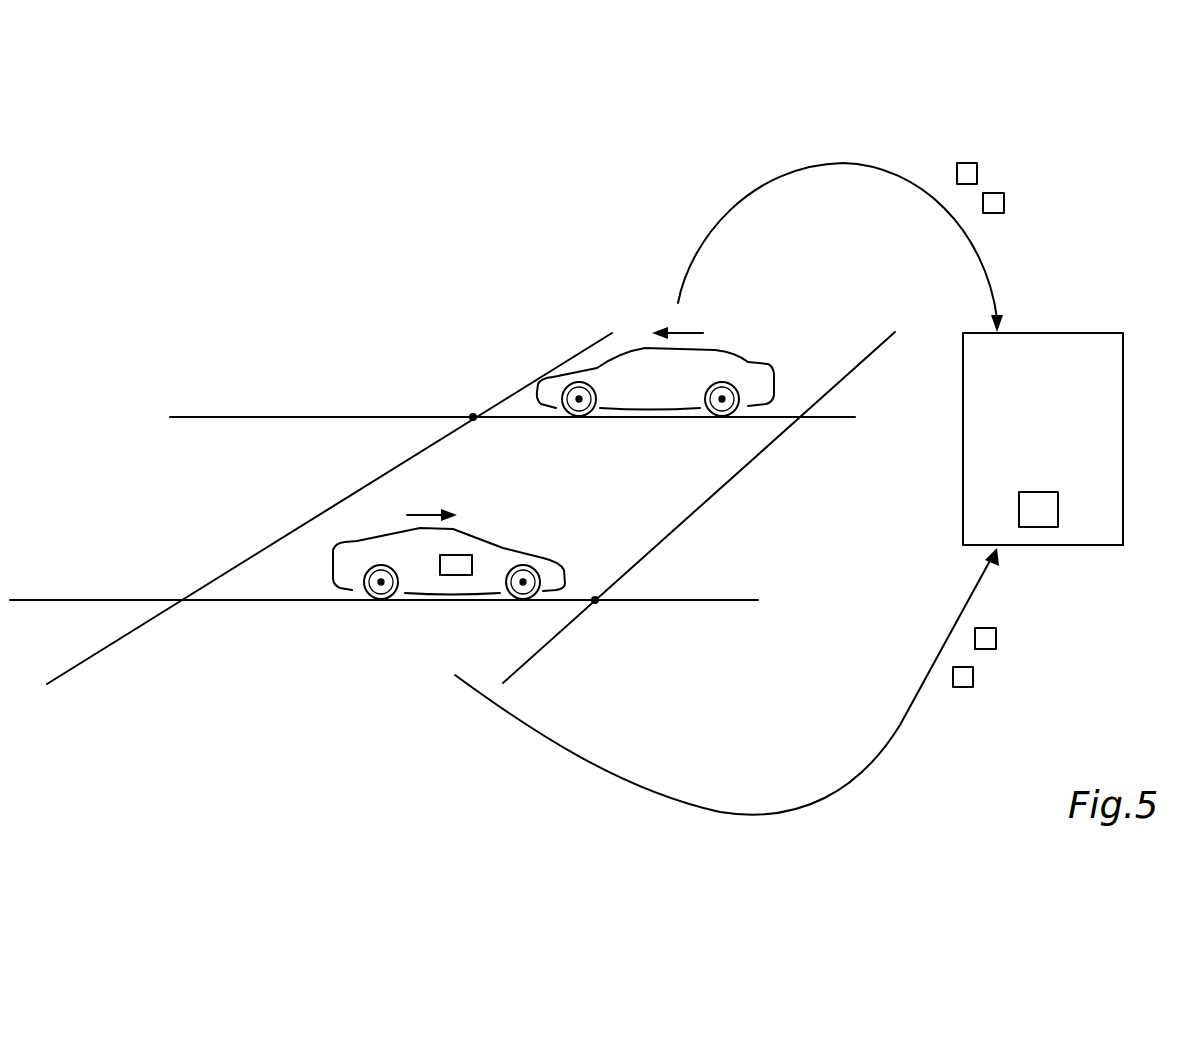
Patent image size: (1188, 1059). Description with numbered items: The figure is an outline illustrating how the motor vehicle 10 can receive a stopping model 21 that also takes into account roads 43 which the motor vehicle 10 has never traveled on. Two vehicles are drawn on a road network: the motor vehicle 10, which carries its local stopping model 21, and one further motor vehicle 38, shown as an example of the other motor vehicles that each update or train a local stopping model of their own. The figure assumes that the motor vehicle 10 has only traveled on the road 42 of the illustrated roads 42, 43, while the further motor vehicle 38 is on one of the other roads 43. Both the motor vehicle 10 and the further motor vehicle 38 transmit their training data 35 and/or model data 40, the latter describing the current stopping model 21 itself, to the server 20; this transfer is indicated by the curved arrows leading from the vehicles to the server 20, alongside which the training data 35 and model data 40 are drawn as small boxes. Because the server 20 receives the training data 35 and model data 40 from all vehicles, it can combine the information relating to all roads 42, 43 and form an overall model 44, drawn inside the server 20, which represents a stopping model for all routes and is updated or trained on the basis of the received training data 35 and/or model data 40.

The motor vehicle 10 is at (449, 564).
The server 20 is at (999, 474).
The stopping model 21 is at (460, 575).
The training data 35 is at (970, 163).
The further motor vehicle 38 is at (748, 360).
The model data 40 is at (997, 193).
The road 42 is at (300, 603).
The road 43 is at (360, 490).
The overall model 44 is at (1041, 492).